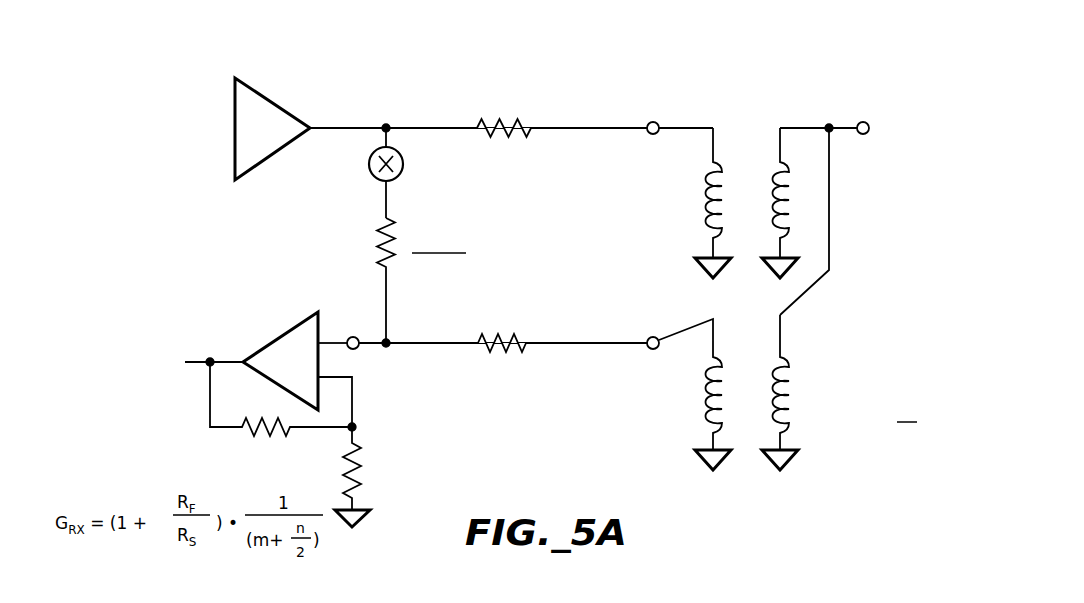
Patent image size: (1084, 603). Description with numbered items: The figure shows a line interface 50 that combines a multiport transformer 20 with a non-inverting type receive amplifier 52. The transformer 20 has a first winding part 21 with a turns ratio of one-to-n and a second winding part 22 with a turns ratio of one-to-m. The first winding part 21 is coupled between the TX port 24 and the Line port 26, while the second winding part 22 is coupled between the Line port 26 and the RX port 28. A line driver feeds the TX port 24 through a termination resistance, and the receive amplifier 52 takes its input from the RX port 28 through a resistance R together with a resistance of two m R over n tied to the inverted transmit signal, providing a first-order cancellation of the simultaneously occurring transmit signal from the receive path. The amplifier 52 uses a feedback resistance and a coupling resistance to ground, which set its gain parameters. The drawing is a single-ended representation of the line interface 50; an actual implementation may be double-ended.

The line interface 50 is at (596, 44).
The transformer 20 is at (788, 269).
The TX port 24 is at (653, 121).
The Line port 26 is at (868, 133).
The first winding part 21 is at (792, 203).
The second winding part 22 is at (792, 396).
The RX port 28 is at (653, 351).
The non-inverting type receive amplifier 52 is at (378, 411).